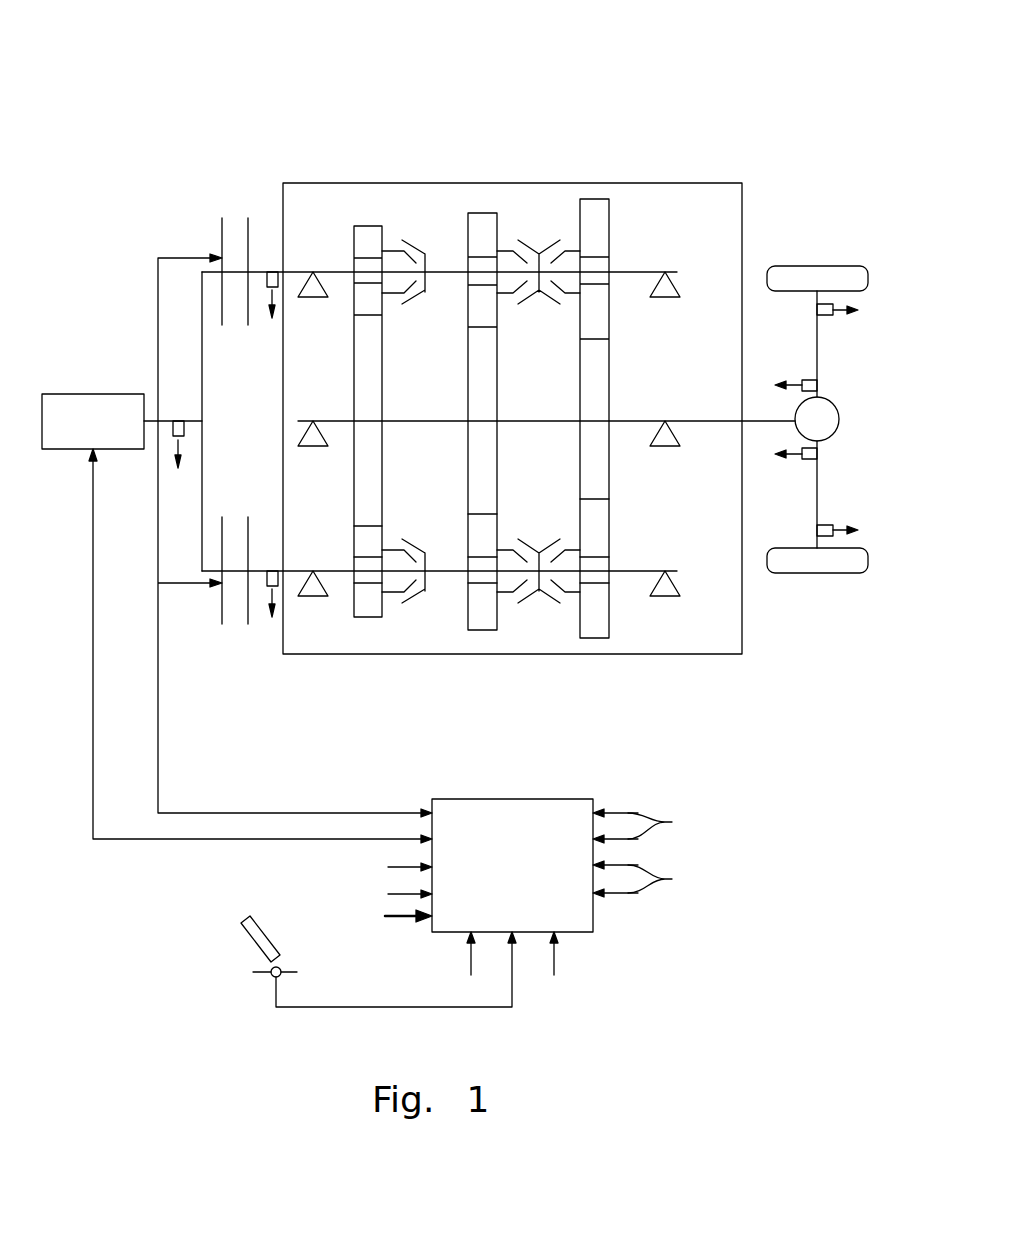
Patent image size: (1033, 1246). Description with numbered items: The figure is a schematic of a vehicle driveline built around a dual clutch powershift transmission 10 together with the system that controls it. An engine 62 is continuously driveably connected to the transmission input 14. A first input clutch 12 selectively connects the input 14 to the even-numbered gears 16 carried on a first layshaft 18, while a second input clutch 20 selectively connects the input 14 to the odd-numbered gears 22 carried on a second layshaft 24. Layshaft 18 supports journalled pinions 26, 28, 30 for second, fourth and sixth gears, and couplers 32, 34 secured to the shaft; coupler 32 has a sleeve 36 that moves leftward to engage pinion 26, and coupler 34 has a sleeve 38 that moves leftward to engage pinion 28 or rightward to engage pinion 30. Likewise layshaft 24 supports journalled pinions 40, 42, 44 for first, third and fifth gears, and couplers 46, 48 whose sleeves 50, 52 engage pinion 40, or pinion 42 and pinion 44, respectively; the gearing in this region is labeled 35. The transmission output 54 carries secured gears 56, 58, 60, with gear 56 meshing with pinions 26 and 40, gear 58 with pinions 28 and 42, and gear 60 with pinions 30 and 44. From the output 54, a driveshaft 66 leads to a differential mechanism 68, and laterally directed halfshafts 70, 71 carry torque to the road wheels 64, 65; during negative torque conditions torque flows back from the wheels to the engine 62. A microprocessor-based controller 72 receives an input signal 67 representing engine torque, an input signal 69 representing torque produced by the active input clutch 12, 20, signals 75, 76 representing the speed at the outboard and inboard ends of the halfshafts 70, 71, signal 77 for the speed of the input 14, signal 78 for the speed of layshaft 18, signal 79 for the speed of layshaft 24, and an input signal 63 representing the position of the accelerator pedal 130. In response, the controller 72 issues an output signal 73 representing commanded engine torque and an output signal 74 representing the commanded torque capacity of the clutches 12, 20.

The powershift transmission 10 is at (603, 72).
The first input clutch 12 is at (220, 593).
The input 14 is at (200, 405).
The even-numbered gears 16 is at (402, 634).
The first layshaft 18 is at (258, 574).
The second input clutch 20 is at (220, 252).
The odd-numbered gears 22 is at (407, 198).
The second layshaft 24 is at (259, 271).
The pinion 26 is at (354, 548).
The pinion 28 is at (468, 552).
The pinion 30 is at (609, 537).
The coupler 32 is at (427, 590).
The coupler 34 is at (540, 592).
The gear set 35 is at (517, 183).
The sleeve 36 is at (415, 540).
The sleeve 38 is at (539, 553).
The pinion 40 is at (362, 226).
The pinion 42 is at (482, 213).
The pinion 44 is at (596, 199).
The coupler 46 is at (425, 256).
The coupler 48 is at (527, 305).
The sleeve 50 is at (410, 305).
The sleeve 52 is at (527, 253).
The transmission output 54 is at (693, 420).
The gear 56 is at (383, 465).
The gear 58 is at (497, 465).
The gear 60 is at (609, 480).
The engine 62 is at (95, 390).
The input signal 63 is at (323, 1010).
The road wheel 64 is at (800, 266).
The road wheel 65 is at (790, 574).
The driveshaft 66 is at (773, 418).
The input signal 67 is at (470, 963).
The differential mechanism 68 is at (838, 412).
The input signal 69 is at (555, 963).
The halfshaft 70 is at (820, 370).
The halfshaft 71 is at (820, 492).
The controller 72 is at (512, 799).
The output electronic signal 73 is at (93, 590).
The output signal 74 is at (158, 777).
The input signal 75 is at (838, 308).
The input signal 76 is at (808, 378).
The signal 77 is at (184, 440).
The signal 78 is at (276, 595).
The signal 79 is at (276, 293).
The accelerator pedal 130 is at (255, 942).